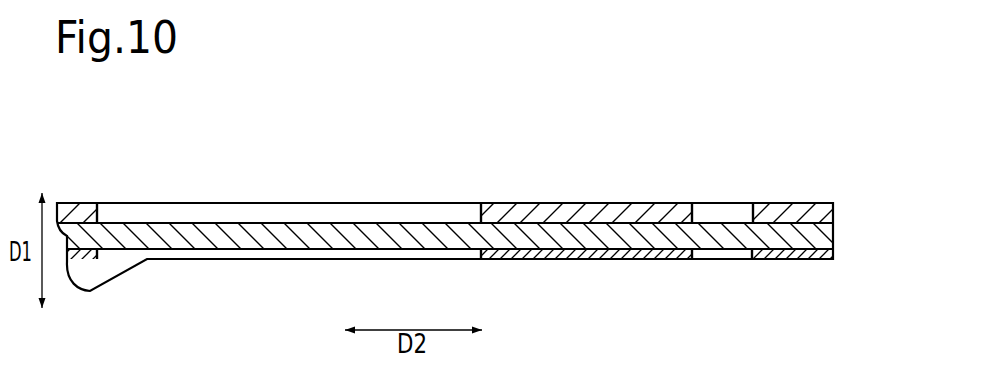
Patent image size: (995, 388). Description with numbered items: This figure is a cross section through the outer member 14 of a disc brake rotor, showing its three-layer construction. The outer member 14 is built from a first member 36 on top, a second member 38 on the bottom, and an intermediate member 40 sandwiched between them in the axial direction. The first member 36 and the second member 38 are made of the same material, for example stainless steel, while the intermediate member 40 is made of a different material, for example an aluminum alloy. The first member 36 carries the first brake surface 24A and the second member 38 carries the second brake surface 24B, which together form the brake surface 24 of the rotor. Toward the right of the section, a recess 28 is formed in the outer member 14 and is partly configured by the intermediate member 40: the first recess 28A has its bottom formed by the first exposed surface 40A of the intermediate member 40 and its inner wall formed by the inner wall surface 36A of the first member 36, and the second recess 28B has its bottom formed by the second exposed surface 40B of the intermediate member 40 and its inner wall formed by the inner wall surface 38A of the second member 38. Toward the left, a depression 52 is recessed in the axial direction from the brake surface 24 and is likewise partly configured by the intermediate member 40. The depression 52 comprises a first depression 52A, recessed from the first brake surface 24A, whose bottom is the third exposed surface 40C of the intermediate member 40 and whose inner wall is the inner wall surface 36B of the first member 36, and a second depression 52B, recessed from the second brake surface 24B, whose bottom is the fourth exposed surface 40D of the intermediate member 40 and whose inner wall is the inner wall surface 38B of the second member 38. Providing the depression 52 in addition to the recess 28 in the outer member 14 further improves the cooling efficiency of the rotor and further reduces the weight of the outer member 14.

The outer member 14 is at (803, 140).
The brake surface 24 is at (586, 232).
The first brake surface 24A is at (560, 203).
The second brake surface 24B is at (560, 260).
The recess 28 is at (726, 228).
The first recess 28A is at (718, 211).
The second recess 28B is at (702, 255).
The first member 36 is at (812, 203).
The inner wall surface 36A is at (743, 203).
The inner wall surface 36B is at (467, 207).
The second member 38 is at (807, 260).
The inner wall surface 38A is at (745, 260).
The inner wall surface 38B is at (472, 260).
The intermediate member 40 is at (893, 246).
The first exposed surface 40A is at (703, 207).
The second exposed surface 40B is at (722, 260).
The third exposed surface 40C is at (296, 209).
The fourth exposed surface 40D is at (292, 258).
The depression 52 is at (138, 244).
The first depression 52A is at (113, 203).
The second depression 52B is at (168, 258).